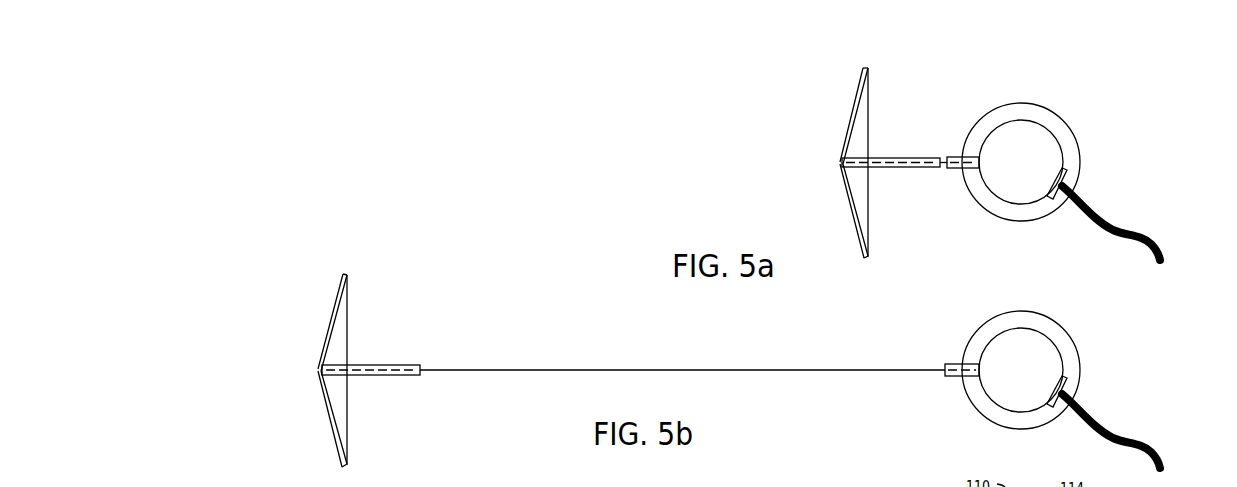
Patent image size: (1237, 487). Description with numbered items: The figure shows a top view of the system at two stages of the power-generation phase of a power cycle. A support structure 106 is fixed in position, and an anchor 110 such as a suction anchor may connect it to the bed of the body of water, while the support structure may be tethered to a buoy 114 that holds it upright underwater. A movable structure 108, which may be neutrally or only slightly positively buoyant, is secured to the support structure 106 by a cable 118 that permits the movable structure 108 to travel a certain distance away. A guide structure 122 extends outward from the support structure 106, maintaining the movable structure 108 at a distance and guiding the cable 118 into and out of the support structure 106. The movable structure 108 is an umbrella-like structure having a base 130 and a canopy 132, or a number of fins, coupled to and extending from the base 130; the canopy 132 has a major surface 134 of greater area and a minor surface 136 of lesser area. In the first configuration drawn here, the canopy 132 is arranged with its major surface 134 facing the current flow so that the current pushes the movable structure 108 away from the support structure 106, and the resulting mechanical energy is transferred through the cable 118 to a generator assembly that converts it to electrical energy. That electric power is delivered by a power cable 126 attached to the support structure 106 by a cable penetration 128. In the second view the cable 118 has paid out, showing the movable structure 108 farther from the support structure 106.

In FIG. 5a, the support structure 106 is at (1111, 117).
In FIG. 5b, the support structure 106 is at (1112, 322).
In FIG. 5a, the movable structure 108 is at (769, 132).
In FIG. 5b, the movable structure 108 is at (269, 345).
In FIG. 5a, the anchor 110 is at (1012, 103).
In FIG. 5b, the anchor 110 is at (1012, 308).
In FIG. 5a, the buoy 114 is at (1033, 120).
In FIG. 5b, the buoy 114 is at (1033, 327).
In FIG. 5a, the cable 118 is at (943, 157).
In FIG. 5b, the cable 118 is at (680, 368).
In FIG. 5a, the guide structure 122 is at (958, 168).
In FIG. 5b, the guide structure 122 is at (957, 362).
In FIG. 5a, the power cable 126 is at (1143, 235).
In FIG. 5b, the power cable 126 is at (1145, 445).
In FIG. 5a, the cable penetration 128 is at (1068, 175).
In FIG. 5b, the cable penetration 128 is at (1073, 382).
In FIG. 5a, the base 130 is at (897, 170).
In FIG. 5b, the base 130 is at (373, 378).
In FIG. 5a, the canopy 132 is at (836, 120).
In FIG. 5b, the canopy 132 is at (319, 318).
In FIG. 5a, the major surface 134 is at (853, 133).
In FIG. 5b, the major surface 134 is at (337, 310).
In FIG. 5a, the minor surface 136 is at (868, 67).
In FIG. 5b, the minor surface 136 is at (347, 275).